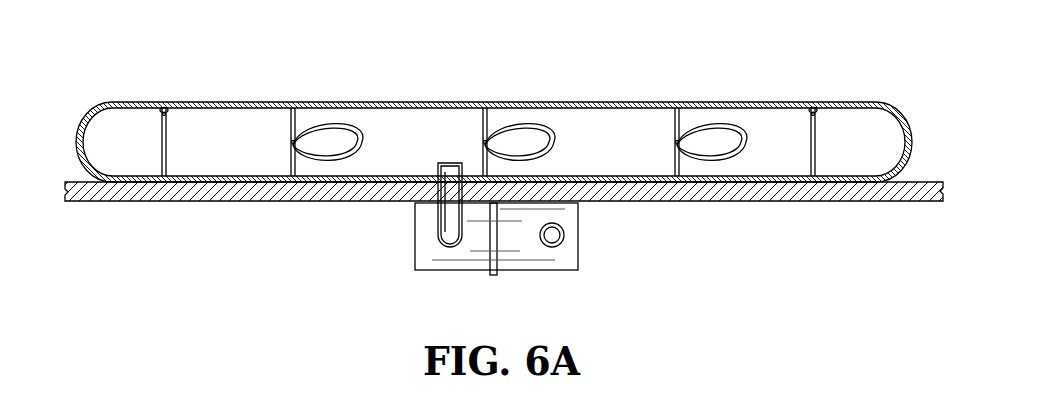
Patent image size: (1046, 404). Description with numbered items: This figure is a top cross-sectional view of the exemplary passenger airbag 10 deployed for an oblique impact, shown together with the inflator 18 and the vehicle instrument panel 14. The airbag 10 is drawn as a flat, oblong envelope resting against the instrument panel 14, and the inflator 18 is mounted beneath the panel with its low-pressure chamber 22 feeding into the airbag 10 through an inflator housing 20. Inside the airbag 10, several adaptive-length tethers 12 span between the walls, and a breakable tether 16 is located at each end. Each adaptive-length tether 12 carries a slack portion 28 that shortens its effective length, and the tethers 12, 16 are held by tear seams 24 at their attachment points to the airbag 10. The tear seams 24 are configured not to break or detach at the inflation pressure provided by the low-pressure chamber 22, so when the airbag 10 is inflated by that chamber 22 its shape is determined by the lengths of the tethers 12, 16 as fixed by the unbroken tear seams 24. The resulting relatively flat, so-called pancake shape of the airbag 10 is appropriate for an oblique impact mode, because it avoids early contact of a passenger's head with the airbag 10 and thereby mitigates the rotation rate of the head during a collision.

The passenger airbag 10 is at (457, 102).
The adaptive-length tether 12 is at (303, 120).
The vehicle instrument panel 14 is at (790, 202).
The breakable tether 16 is at (170, 143).
The inflator 18 is at (485, 224).
The inflator housing 20 is at (578, 213).
The low-pressure chamber 22 is at (415, 212).
The tear seam 24 is at (158, 115).
The slack portion 28 is at (362, 134).